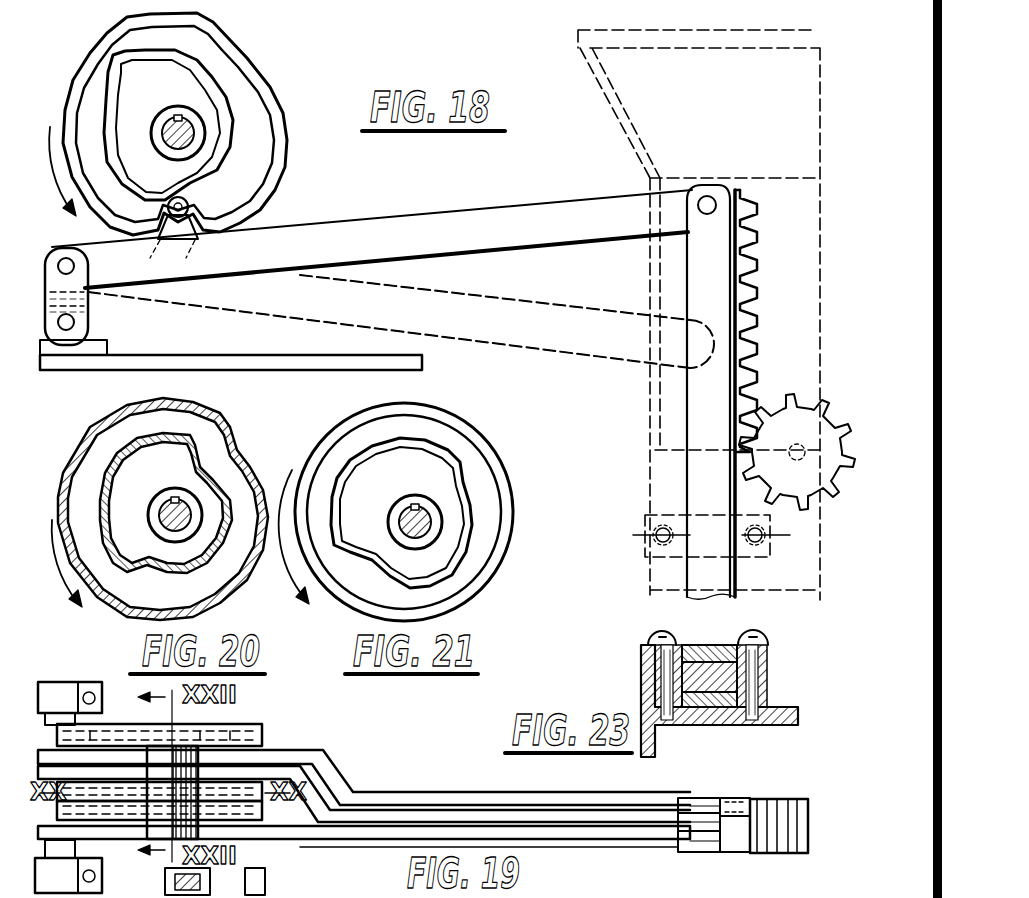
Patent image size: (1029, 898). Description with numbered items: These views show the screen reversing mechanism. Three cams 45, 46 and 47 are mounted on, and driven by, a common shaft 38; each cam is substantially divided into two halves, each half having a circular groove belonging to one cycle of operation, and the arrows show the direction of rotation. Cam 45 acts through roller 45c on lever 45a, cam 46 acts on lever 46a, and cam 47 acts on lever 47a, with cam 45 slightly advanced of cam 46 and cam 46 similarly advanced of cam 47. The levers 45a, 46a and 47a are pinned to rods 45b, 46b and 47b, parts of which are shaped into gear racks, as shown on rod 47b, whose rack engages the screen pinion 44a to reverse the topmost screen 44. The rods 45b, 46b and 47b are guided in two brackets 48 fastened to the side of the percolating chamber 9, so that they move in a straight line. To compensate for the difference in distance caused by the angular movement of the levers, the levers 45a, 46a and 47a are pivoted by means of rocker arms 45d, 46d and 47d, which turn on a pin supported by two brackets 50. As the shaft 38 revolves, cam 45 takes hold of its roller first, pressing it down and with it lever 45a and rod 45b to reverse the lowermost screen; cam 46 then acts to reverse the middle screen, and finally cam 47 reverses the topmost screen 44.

In FIG. 23, the percolating chamber 9 is at (690, 728).
In FIG. 18, the shaft 38 is at (173, 142).
In FIG. 20, the shaft 38 is at (160, 520).
In FIG. 21, the shaft 38 is at (400, 526).
In FIG. 19, the shaft 38 is at (185, 725).
In FIG. 18, the topmost screen 44 is at (678, 450).
In FIG. 18, the screen pinion 44a is at (800, 415).
In FIG. 18, the cam 45 is at (247, 102).
In FIG. 19, the cam 45 is at (262, 815).
In FIG. 18, the lever 45a is at (503, 150).
In FIG. 19, the lever 45a is at (548, 846).
In FIG. 19, the rod 45b is at (728, 855).
In FIG. 23, the rod 45b is at (748, 700).
In FIG. 18, the roller 45c is at (190, 208).
In FIG. 18, the rocker arm 45d is at (88, 302).
In FIG. 20, the cam 46 is at (222, 428).
In FIG. 19, the cam 46 is at (262, 790).
In FIG. 18, the lever 46a is at (495, 239).
In FIG. 19, the lever 46a is at (508, 812).
In FIG. 19, the rod 46b is at (735, 822).
In FIG. 23, the rod 46b is at (745, 660).
In FIG. 18, the rocker arm 46d is at (102, 318).
In FIG. 21, the cam 47 is at (465, 435).
In FIG. 19, the cam 47 is at (262, 735).
In FIG. 18, the lever 47a is at (389, 273).
In FIG. 19, the lever 47a is at (694, 800).
In FIG. 18, the rod 47b is at (752, 218).
In FIG. 19, the rod 47b is at (735, 807).
In FIG. 23, the rod 47b is at (715, 650).
In FIG. 18, the rocker arm 47d is at (102, 335).
In FIG. 18, the bracket 48 is at (660, 548).
In FIG. 23, the bracket 48 is at (645, 665).
In FIG. 19, the bracket 50 is at (78, 673).